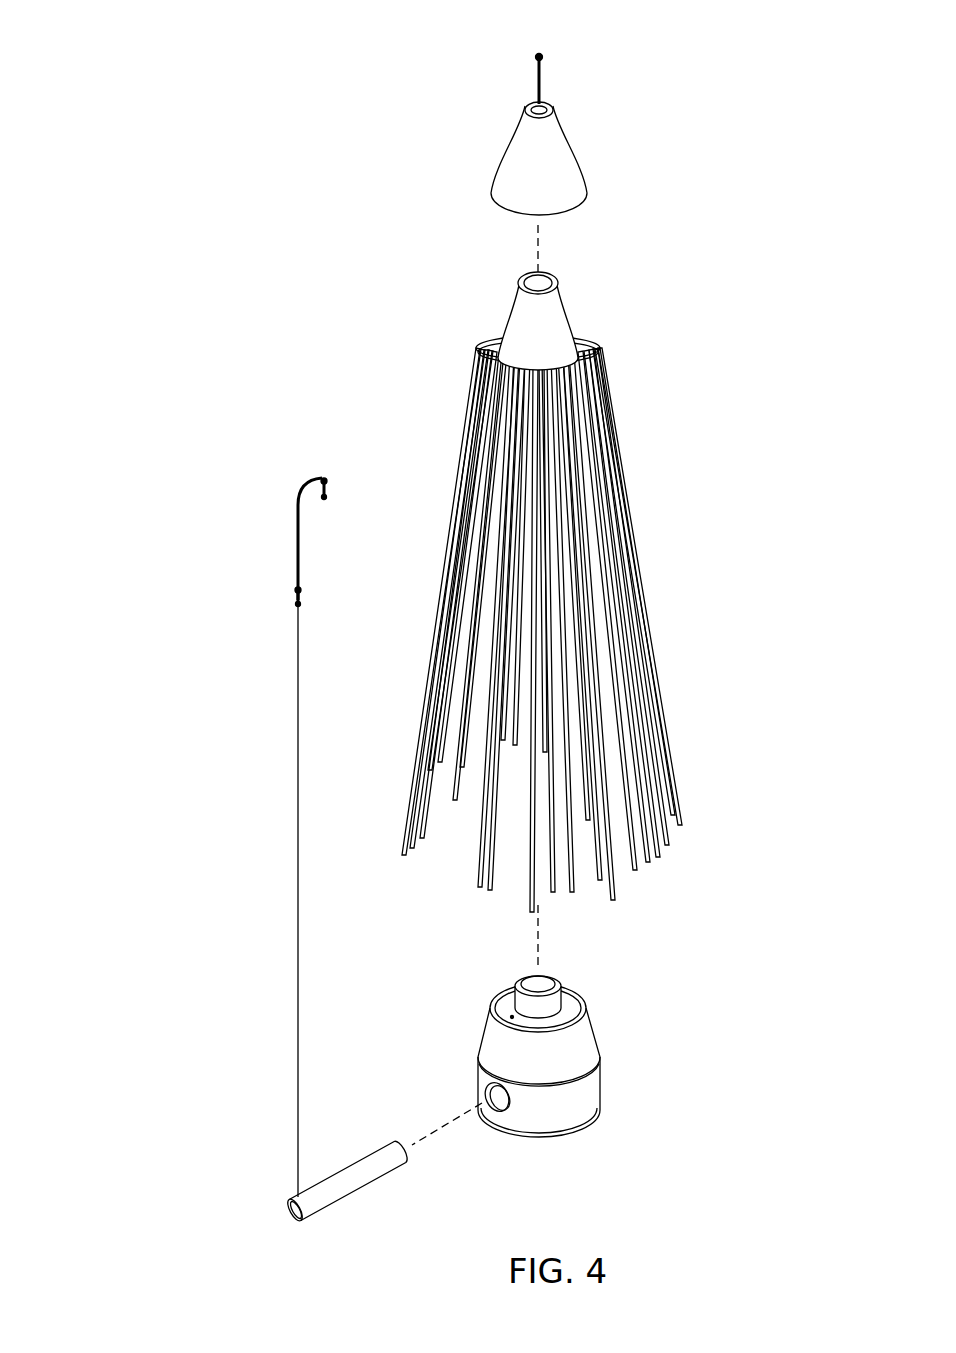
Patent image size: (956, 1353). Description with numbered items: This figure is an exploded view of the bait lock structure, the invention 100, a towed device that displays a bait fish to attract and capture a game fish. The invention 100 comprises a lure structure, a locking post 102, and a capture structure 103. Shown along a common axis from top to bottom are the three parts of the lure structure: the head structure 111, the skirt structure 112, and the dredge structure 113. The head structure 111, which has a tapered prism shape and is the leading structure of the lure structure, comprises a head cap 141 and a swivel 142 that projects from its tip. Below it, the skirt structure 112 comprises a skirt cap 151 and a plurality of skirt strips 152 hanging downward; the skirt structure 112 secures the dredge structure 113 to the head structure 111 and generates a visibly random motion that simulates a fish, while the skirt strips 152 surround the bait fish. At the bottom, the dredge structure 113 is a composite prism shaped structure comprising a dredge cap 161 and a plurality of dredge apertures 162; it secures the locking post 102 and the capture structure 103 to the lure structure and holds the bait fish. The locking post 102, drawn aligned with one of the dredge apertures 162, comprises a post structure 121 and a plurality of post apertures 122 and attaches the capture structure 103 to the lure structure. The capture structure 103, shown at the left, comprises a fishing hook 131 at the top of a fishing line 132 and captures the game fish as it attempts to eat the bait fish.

The invention 100 is at (233, 127).
The locking post 102 is at (375, 1183).
The capture structure 103 is at (248, 796).
The head structure 111 is at (692, 22).
The skirt structure 112 is at (715, 218).
The dredge structure 113 is at (733, 955).
The post structure 121 is at (368, 1160).
The post apertures 122 is at (325, 1211).
The fishing hook 131 is at (295, 523).
The fishing line 132 is at (297, 720).
The head cap 141 is at (556, 145).
The swivel 142 is at (541, 104).
The skirt cap 151 is at (556, 313).
The skirt strips 152 is at (604, 380).
The dredge cap 161 is at (598, 1053).
The dredge apertures 162 is at (500, 1096).